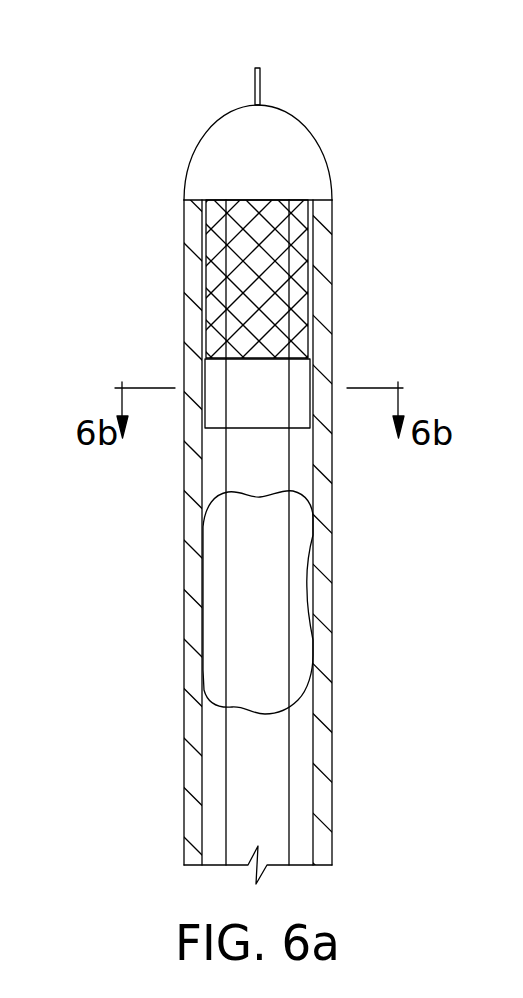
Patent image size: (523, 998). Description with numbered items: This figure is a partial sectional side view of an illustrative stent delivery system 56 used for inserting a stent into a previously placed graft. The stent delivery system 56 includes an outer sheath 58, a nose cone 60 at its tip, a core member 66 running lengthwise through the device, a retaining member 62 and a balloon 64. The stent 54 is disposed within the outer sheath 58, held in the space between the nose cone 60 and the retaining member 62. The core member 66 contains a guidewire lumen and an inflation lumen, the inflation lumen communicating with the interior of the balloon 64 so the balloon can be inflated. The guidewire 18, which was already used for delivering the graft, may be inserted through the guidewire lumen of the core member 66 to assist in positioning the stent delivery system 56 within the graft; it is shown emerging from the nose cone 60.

The guidewire 18 is at (261, 87).
The stent 54 is at (216, 286).
The stent delivery system 56 is at (136, 172).
The outer sheath 58 is at (325, 318).
The nose cone 60 is at (302, 152).
The retaining member 62 is at (293, 380).
The balloon 64 is at (215, 612).
The core member 66 is at (273, 798).